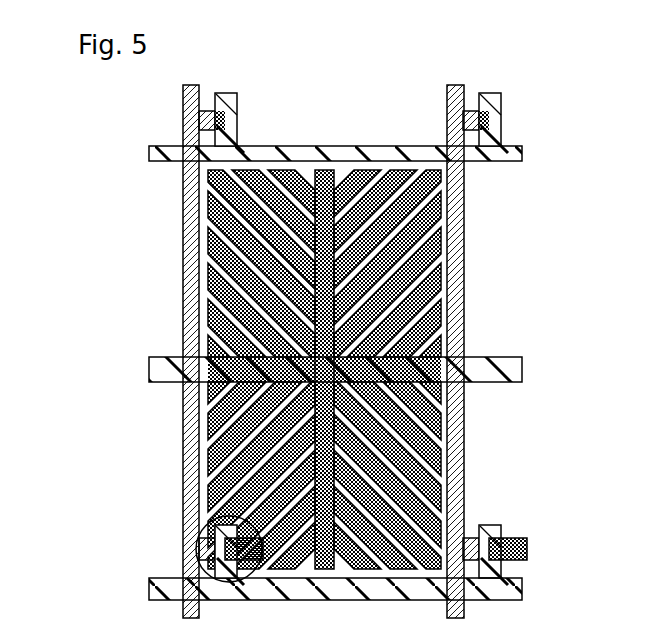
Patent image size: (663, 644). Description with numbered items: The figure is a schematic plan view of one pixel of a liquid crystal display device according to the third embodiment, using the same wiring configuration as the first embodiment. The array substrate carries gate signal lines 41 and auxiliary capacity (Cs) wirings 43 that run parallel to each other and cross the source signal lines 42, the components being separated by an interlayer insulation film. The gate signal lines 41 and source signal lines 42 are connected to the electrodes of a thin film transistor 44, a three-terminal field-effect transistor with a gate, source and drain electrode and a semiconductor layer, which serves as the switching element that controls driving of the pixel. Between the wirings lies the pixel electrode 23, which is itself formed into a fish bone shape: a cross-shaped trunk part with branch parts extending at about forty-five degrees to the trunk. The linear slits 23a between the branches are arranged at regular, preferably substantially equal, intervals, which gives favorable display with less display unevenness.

The pixel electrode 23 is at (225, 259).
The slits 23a is at (235, 212).
The gate signal lines 41 is at (142, 575).
The source signal lines 42 is at (185, 435).
The auxiliary capacity (Cs) wirings 43 is at (165, 363).
The thin film transistor 44 is at (188, 535).